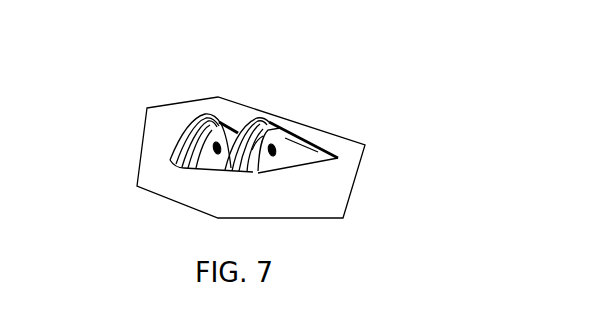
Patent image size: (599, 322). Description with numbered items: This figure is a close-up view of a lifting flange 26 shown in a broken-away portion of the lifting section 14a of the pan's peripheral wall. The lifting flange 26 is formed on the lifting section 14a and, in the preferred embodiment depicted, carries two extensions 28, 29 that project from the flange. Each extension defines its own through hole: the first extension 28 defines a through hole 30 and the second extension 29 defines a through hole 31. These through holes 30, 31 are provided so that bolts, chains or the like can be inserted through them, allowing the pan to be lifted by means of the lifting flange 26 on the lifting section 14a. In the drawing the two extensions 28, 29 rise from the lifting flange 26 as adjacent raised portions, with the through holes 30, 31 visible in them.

The lifting section 14a is at (350, 196).
The lifting flange 26 is at (151, 142).
The extension 28 is at (312, 146).
The extension 29 is at (222, 118).
The through hole 30 is at (279, 136).
The through hole 31 is at (203, 141).